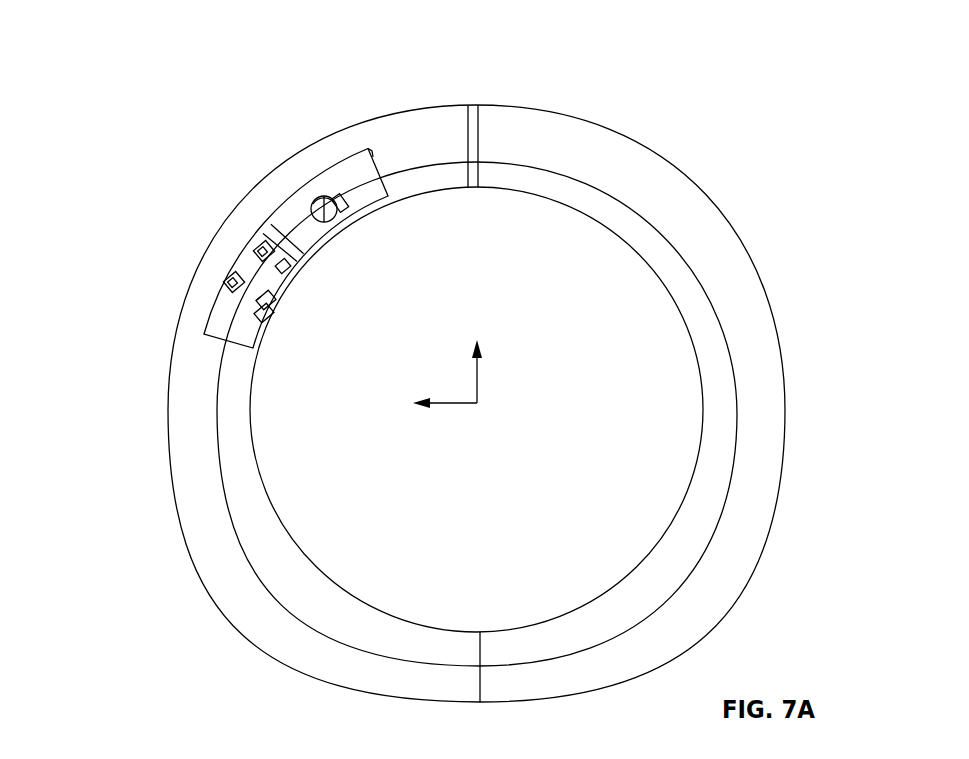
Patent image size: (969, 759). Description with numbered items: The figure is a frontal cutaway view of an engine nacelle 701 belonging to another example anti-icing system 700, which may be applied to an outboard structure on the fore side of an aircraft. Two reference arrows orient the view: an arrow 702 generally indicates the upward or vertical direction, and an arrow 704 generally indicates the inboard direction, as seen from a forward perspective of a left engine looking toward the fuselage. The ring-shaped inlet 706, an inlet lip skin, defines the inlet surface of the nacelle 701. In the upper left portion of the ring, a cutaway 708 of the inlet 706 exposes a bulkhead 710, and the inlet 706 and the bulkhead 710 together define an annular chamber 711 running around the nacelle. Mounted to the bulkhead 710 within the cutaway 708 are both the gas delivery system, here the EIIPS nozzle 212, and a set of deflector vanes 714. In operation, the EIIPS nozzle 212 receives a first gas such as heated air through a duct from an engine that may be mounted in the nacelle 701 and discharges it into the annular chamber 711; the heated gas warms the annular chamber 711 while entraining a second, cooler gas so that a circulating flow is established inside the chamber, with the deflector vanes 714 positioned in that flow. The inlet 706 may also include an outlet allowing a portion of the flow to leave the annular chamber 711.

The anti-icing system 700 is at (146, 98).
The engine nacelle 701 is at (782, 356).
The inlet 706 is at (720, 235).
The arrow 702 is at (477, 370).
The arrow 704 is at (442, 405).
The cutaway 708 is at (383, 203).
The bulkhead 710 is at (290, 232).
The annular chamber 711 is at (245, 272).
The deflector vanes 714 is at (228, 288).
The EIIPS nozzle 212 is at (318, 197).